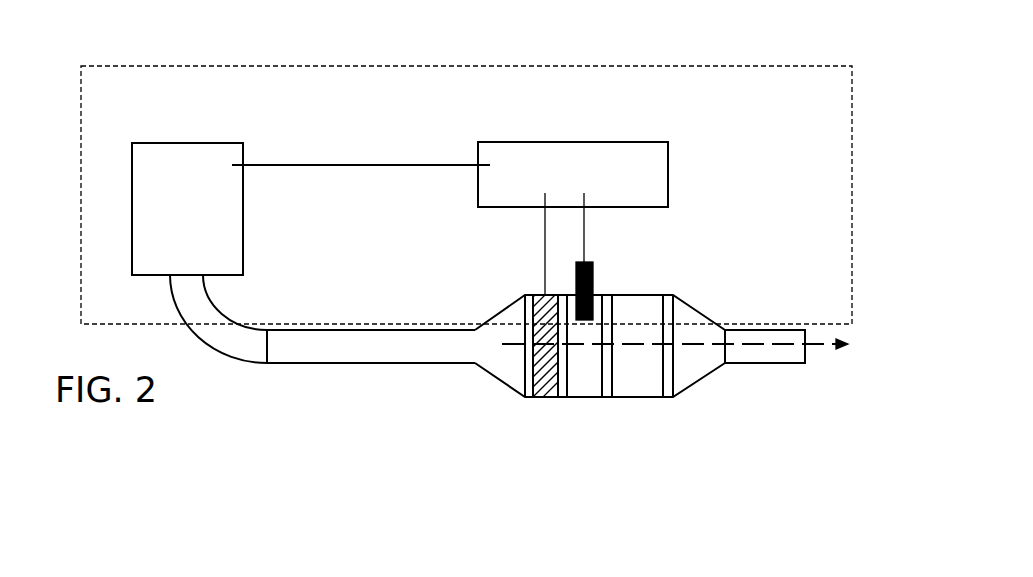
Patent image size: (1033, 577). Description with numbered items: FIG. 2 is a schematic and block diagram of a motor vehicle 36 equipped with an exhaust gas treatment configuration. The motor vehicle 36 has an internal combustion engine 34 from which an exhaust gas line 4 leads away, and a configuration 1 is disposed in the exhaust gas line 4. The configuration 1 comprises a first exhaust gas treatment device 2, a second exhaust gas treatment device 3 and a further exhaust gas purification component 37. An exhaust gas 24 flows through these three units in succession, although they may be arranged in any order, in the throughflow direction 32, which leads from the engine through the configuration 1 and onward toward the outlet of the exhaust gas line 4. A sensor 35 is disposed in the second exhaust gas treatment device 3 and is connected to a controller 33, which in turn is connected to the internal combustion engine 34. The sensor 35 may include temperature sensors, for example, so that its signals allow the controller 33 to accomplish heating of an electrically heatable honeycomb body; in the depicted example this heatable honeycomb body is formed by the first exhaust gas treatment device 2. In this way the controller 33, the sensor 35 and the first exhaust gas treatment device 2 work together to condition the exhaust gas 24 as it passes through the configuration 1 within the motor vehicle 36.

The configuration 1 is at (558, 437).
The first exhaust gas treatment device 2 is at (537, 397).
The second exhaust gas treatment device 3 is at (587, 368).
The exhaust gas line 4 is at (355, 356).
The exhaust gas 24 is at (825, 347).
The throughflow direction 32 is at (763, 347).
The controller 33 is at (510, 152).
The internal combustion engine 34 is at (182, 165).
The sensor 35 is at (593, 275).
The motor vehicle 36 is at (778, 66).
The further exhaust gas purification component 37 is at (645, 367).